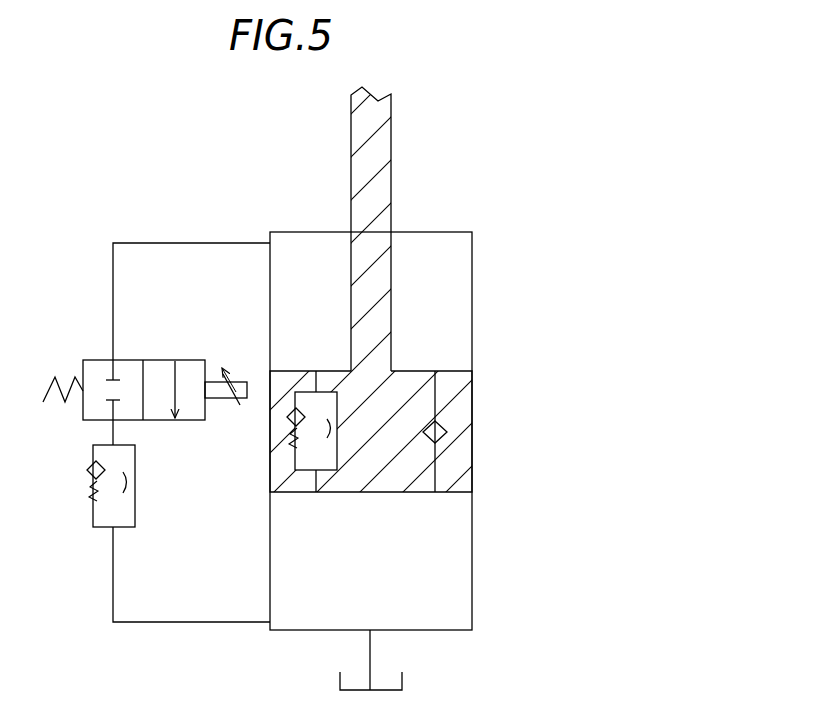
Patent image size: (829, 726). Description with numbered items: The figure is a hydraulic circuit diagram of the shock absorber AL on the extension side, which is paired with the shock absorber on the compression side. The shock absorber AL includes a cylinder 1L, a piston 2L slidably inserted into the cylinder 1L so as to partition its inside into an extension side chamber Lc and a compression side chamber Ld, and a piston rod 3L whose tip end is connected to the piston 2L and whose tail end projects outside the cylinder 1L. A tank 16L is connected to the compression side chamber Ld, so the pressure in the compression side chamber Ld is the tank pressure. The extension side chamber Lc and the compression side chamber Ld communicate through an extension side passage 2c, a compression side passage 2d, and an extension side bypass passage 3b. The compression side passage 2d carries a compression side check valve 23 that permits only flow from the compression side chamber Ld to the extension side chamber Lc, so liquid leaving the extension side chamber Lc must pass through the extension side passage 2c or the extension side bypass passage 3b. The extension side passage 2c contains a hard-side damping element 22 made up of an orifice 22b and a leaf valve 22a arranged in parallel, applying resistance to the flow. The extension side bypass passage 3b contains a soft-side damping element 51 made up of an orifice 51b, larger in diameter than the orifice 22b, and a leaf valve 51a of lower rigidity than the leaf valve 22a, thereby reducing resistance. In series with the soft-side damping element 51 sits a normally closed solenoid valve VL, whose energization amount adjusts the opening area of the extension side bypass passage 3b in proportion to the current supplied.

The shock absorber on the extension side AL is at (414, 370).
The cylinder 1L is at (472, 533).
The piston rod 3L is at (385, 173).
The piston 2L is at (336, 493).
The extension side passage 2c is at (297, 482).
The compression side passage 2d is at (437, 393).
The hard-side damping element 22 is at (292, 380).
The leaf valve 22a is at (289, 413).
The orifice 22b is at (342, 422).
The compression side check valve 23 is at (441, 432).
The extension side bypass passage 3b is at (110, 310).
The solenoid valve VL is at (90, 425).
The soft-side damping element 51 is at (86, 526).
The leaf valve 51a is at (83, 478).
The orifice 51b is at (140, 487).
The tank 16L is at (402, 680).
The extension side chamber Lc is at (431, 319).
The compression side chamber Ld is at (432, 574).